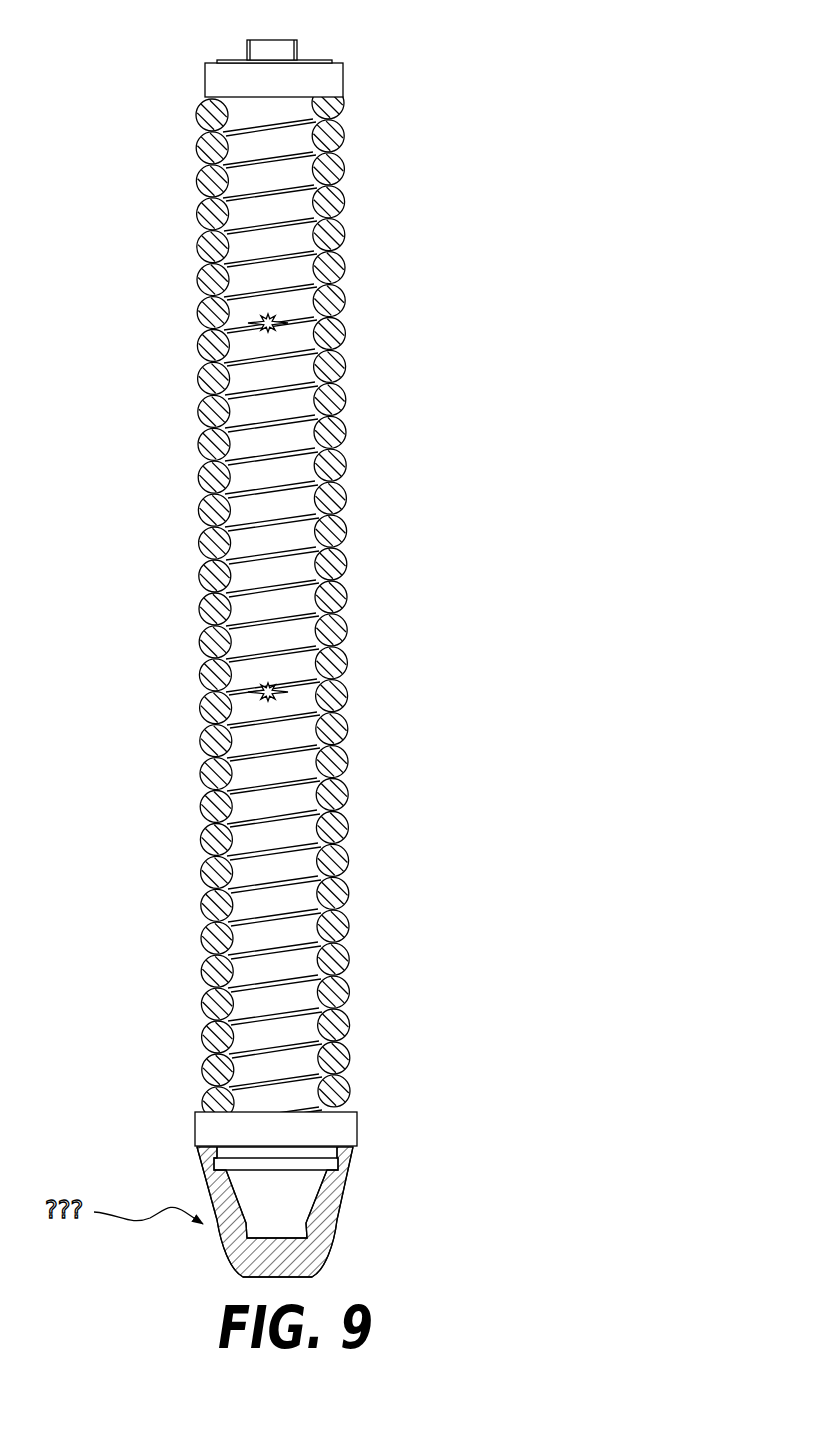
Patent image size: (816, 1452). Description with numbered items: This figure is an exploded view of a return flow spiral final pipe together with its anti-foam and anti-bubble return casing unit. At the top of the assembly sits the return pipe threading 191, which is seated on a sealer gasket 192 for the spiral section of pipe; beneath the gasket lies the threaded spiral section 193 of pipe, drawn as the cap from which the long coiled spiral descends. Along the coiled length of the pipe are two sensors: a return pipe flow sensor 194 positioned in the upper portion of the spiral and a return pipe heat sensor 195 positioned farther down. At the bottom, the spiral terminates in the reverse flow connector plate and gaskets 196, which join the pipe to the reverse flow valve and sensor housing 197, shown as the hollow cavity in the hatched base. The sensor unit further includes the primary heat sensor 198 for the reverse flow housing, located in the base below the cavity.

The return pipe threading 191 is at (283, 50).
The sealer gasket 192 is at (343, 57).
The threaded spiral section 193 is at (272, 71).
The return pipe flow sensor 194 is at (287, 309).
The return pipe heat sensor 195 is at (282, 676).
The reverse flow connector plate and gaskets 196 is at (334, 1126).
The reverse flow valve and sensor housing 197 is at (287, 1200).
The primary heat sensor 198 is at (302, 1251).